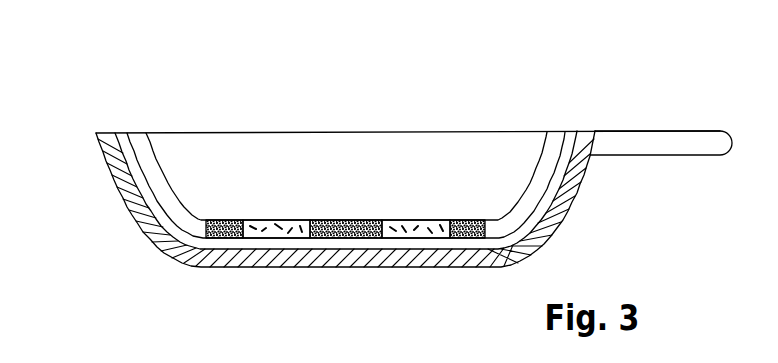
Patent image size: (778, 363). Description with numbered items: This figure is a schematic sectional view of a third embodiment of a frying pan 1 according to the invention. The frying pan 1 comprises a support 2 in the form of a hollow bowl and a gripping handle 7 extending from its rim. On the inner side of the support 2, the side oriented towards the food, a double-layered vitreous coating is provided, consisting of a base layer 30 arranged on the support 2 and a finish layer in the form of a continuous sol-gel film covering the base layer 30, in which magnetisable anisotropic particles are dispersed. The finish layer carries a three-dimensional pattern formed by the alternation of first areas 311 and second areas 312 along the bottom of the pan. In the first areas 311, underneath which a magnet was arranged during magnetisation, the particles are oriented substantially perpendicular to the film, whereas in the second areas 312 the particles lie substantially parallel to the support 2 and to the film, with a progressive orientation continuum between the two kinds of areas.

The frying pan 1 is at (391, 122).
The support 2 is at (558, 226).
The gripping handle 7 is at (653, 143).
The base layer 30 is at (120, 145).
The first areas 311 is at (223, 221).
The second areas 312 is at (273, 226).